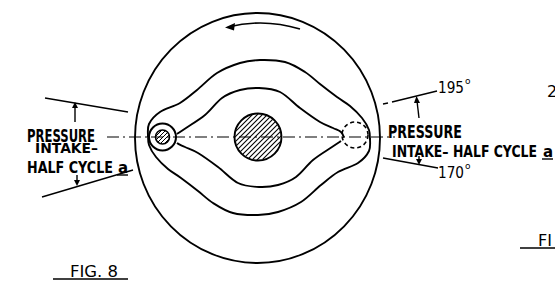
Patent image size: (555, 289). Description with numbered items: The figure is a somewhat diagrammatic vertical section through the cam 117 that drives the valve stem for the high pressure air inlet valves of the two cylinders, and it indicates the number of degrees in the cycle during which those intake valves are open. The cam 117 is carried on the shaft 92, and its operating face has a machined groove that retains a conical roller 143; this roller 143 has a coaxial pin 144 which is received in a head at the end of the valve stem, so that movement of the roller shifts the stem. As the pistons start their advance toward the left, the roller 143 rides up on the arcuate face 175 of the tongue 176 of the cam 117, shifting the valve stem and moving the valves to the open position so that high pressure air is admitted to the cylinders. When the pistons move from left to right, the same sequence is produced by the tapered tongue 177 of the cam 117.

The shaft 92 is at (255, 124).
The cam 117 is at (257, 138).
The conical roller 143 is at (149, 129).
The coaxial pin 144 is at (153, 151).
The arcuate face 175 is at (188, 148).
The tongue 176 is at (187, 143).
The tapered tongue 177 is at (328, 140).